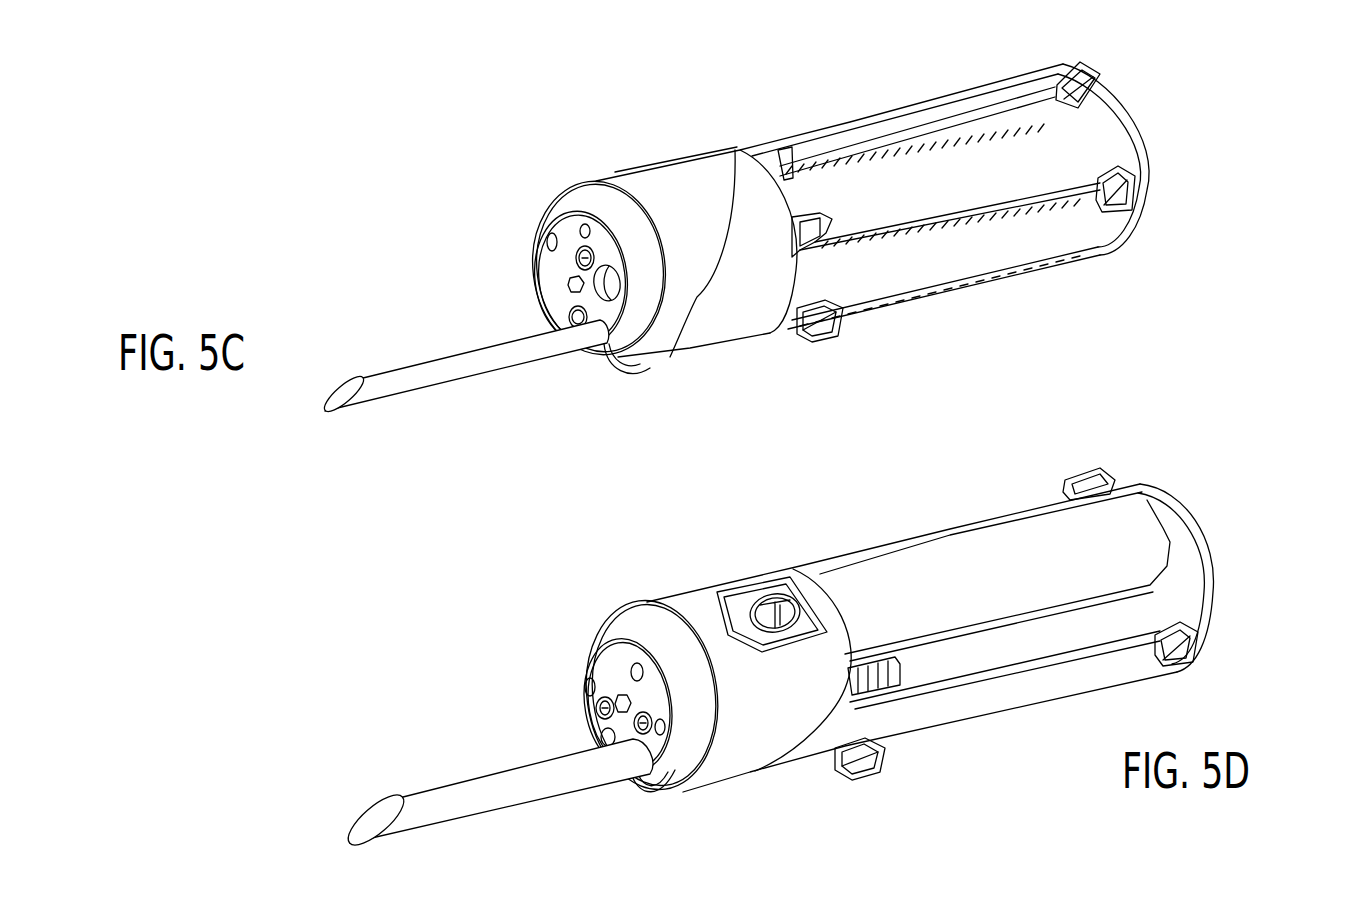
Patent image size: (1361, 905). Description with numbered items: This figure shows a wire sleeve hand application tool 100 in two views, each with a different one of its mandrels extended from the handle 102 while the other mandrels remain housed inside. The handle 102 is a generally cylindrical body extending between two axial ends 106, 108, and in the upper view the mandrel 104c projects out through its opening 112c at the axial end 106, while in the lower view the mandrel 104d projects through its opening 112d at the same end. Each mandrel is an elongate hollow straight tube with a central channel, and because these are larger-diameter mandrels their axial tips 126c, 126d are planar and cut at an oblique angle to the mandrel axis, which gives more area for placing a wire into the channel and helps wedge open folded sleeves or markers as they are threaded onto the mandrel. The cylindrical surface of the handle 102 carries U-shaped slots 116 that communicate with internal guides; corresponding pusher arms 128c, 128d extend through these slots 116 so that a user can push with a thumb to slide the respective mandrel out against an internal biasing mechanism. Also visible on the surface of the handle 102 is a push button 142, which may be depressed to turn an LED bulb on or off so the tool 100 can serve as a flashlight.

In FIG. 5C, the wire sleeve hand application tool 100 is at (393, 186).
In FIG. 5D, the wire sleeve hand application tool 100 is at (443, 645).
In FIG. 5C, the handle 102 is at (910, 122).
In FIG. 5D, the handle 102 is at (968, 545).
In FIG. 5C, the mandrel 104c is at (504, 370).
In FIG. 5D, the mandrel 104d is at (470, 786).
In FIG. 5C, the axial end 106 is at (496, 226).
In FIG. 5D, the axial end 106 is at (543, 681).
In FIG. 5C, the axial end 108 is at (1192, 158).
In FIG. 5D, the axial end 108 is at (1245, 504).
In FIG. 5C, the opening 112c is at (626, 362).
In FIG. 5D, the opening 112d is at (665, 785).
In FIG. 5C, the slot 116 is at (928, 142).
In FIG. 5D, the slot 116 is at (927, 684).
In FIG. 5C, the axial tip 126c is at (326, 410).
In FIG. 5D, the axial tip 126d is at (348, 841).
In FIG. 5C, the pusher arm 128c is at (817, 338).
In FIG. 5D, the pusher arm 128d is at (862, 777).
In FIG. 5D, the push button 142 is at (766, 590).